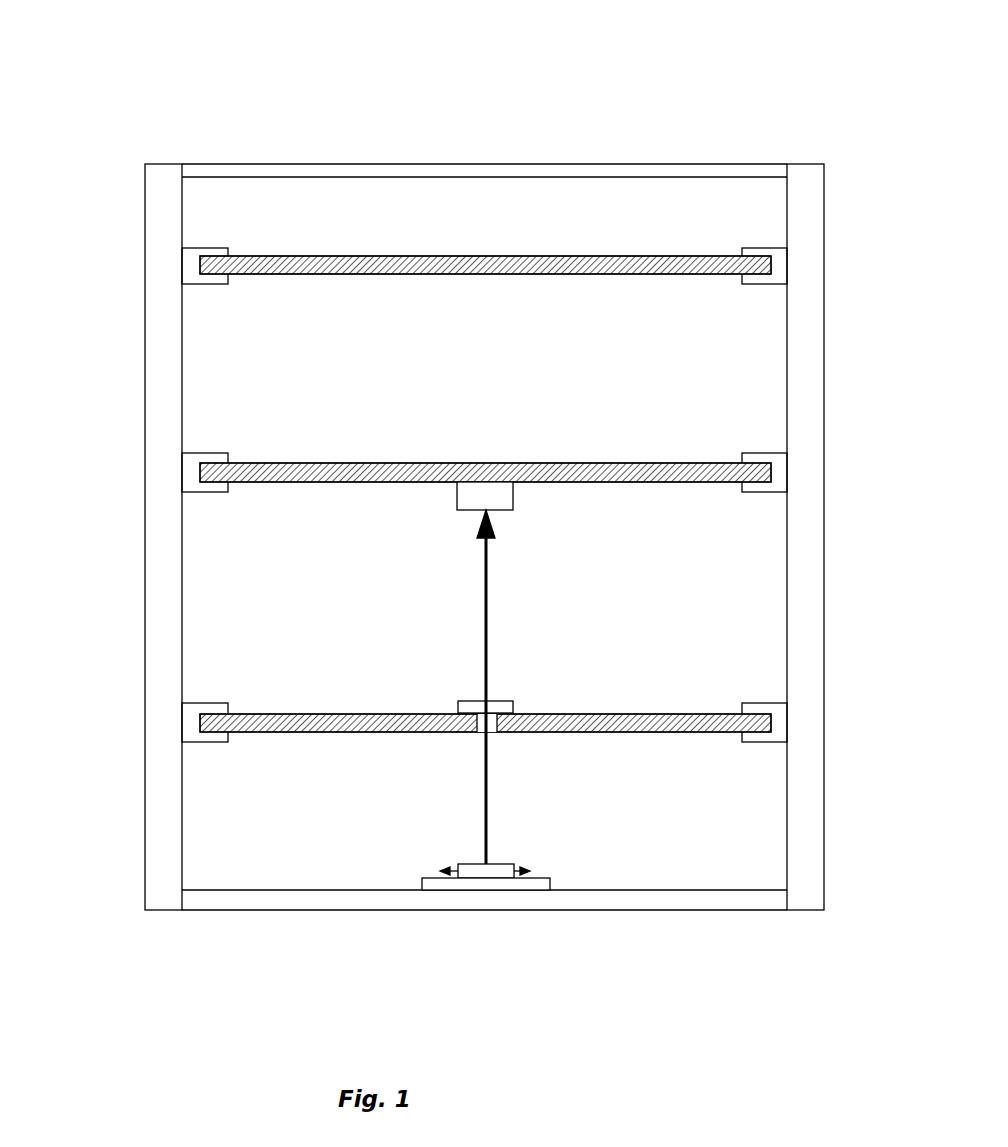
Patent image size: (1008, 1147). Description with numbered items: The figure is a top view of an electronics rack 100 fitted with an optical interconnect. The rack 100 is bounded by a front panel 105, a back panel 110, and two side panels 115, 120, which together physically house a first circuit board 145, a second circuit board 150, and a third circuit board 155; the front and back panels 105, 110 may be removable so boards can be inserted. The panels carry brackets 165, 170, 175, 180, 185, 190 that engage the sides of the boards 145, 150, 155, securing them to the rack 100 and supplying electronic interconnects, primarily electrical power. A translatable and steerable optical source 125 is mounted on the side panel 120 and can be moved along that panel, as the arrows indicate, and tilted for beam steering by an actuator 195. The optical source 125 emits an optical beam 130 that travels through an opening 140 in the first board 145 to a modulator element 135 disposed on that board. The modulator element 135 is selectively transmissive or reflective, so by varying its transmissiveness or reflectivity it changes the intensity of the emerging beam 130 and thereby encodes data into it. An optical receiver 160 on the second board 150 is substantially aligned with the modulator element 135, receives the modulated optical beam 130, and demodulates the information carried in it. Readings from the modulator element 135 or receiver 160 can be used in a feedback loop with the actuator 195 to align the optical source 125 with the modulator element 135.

The electronics rack 100 is at (104, 88).
The front panel 105 is at (165, 335).
The back panel 110 is at (803, 375).
The side panel 115 is at (397, 172).
The side panel 120 is at (440, 898).
The optical source 125 is at (500, 872).
The optical beam 130 is at (485, 783).
The modulator element 135 is at (470, 705).
The opening 140 is at (491, 726).
The first circuit board 145 is at (303, 722).
The second circuit board 150 is at (335, 473).
The third circuit board 155 is at (468, 272).
The optical receiver 160 is at (500, 497).
The bracket 165 is at (192, 735).
The bracket 170 is at (778, 735).
The bracket 175 is at (192, 484).
The bracket 180 is at (778, 483).
The bracket 185 is at (192, 275).
The bracket 190 is at (778, 270).
The actuator 195 is at (540, 884).